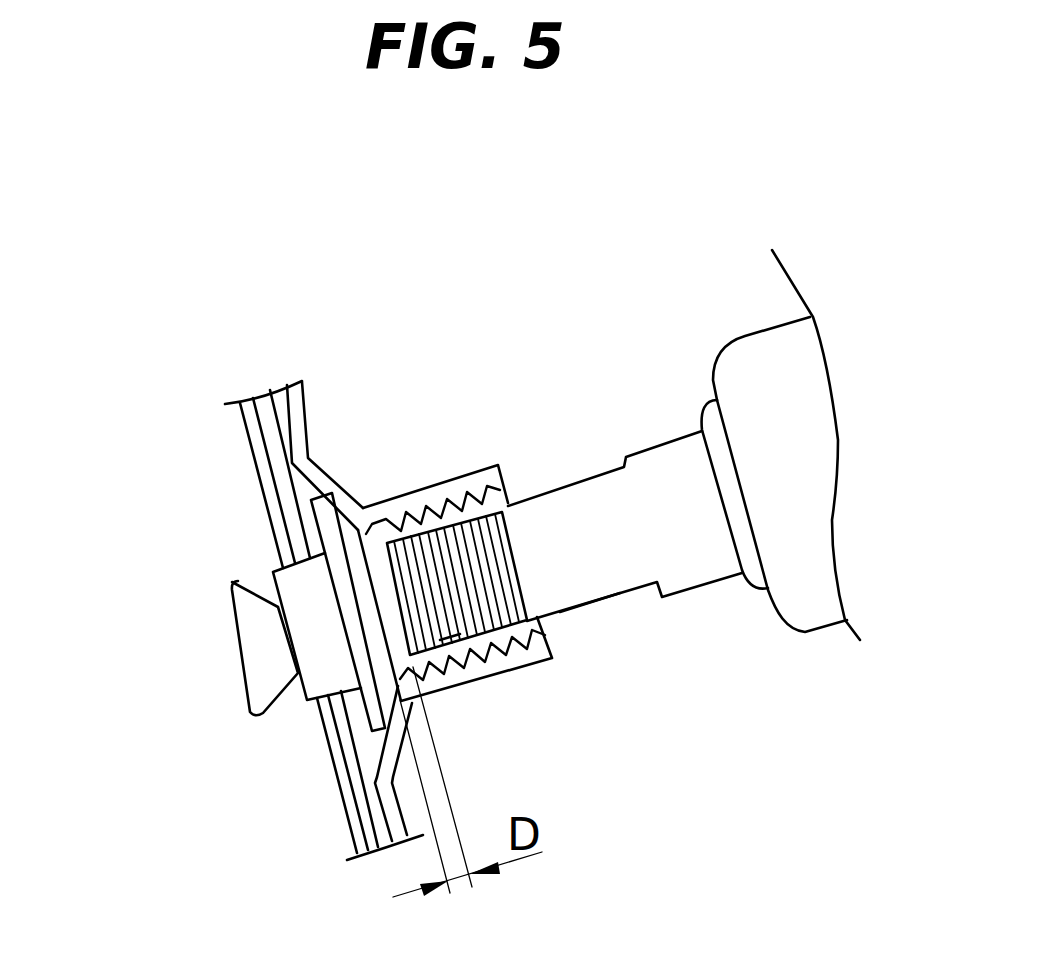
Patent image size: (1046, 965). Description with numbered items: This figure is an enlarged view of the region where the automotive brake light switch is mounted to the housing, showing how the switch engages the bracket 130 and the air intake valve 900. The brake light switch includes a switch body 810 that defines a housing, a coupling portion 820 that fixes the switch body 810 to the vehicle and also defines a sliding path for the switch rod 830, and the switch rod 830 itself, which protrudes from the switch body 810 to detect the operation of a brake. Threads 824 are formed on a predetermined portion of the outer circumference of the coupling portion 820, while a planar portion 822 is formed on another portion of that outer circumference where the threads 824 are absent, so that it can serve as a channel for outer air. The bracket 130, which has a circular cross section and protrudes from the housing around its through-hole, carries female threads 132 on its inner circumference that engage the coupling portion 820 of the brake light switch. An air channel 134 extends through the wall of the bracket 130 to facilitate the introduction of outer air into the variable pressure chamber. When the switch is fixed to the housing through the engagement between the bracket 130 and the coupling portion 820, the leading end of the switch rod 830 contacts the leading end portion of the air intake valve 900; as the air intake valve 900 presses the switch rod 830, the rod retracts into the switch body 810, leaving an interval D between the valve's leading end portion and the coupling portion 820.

The bracket 130 is at (408, 502).
The female threads 132 is at (500, 528).
The air channel 134 is at (443, 494).
The switch body 810 is at (762, 354).
The coupling portion 820 is at (707, 557).
The planar portion 822 is at (597, 607).
The threads 824 is at (481, 598).
The switch rod 830 is at (387, 607).
The air intake valve 900 is at (228, 649).